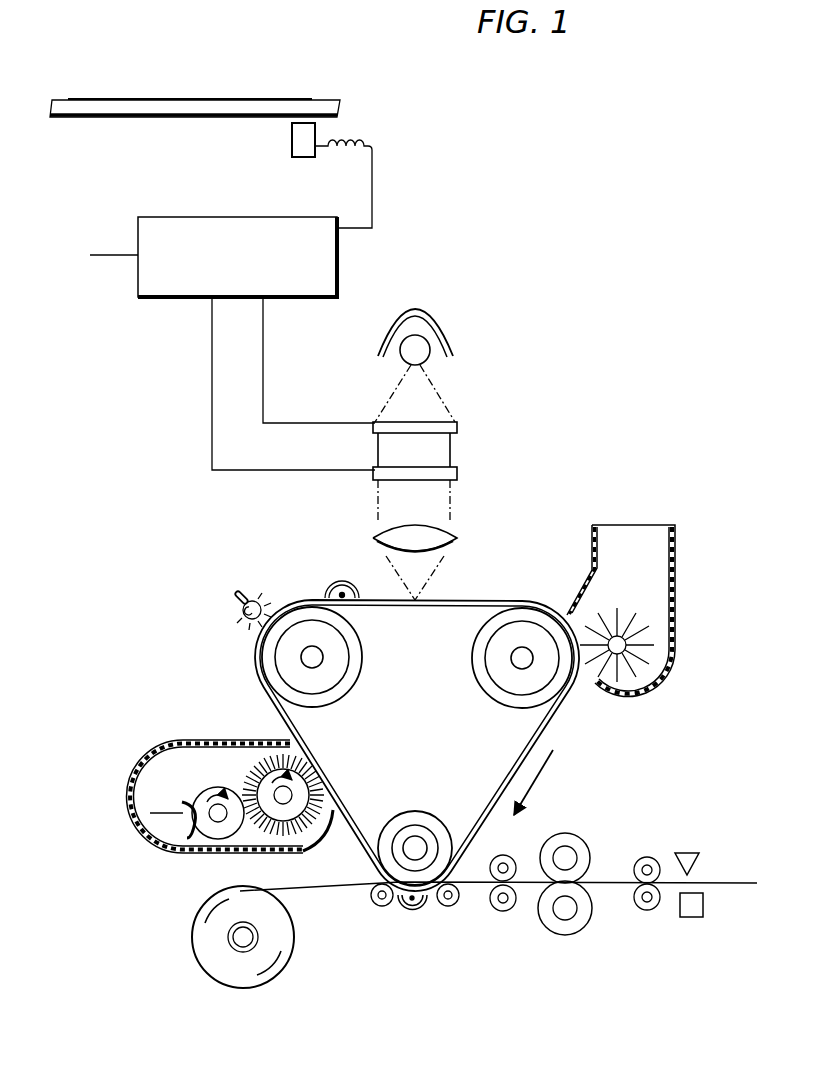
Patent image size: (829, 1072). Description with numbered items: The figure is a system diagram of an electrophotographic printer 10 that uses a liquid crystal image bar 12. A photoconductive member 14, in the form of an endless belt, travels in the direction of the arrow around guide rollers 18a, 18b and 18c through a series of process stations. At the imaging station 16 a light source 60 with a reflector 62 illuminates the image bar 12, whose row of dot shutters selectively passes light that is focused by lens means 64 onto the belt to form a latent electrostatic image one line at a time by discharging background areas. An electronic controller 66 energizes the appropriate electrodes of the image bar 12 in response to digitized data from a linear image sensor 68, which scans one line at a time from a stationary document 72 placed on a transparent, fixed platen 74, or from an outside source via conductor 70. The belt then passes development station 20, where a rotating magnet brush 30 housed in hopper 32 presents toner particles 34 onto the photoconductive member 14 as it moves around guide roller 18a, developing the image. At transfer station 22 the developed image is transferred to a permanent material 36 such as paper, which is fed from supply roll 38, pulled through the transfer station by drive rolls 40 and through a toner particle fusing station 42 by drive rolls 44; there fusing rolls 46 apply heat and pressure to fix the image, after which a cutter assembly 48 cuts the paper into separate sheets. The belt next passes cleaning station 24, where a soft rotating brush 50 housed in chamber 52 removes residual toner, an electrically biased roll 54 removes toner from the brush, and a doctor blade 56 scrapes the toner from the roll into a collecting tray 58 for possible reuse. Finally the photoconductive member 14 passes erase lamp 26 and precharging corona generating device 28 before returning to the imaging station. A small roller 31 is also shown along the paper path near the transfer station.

The electrophotographic printer 10 is at (486, 315).
The liquid crystal image bar 12 is at (482, 411).
The photoconductive member 14 is at (510, 770).
The imaging station 16 is at (448, 528).
The guide roller 18a is at (492, 680).
The guide roller 18b is at (418, 810).
The guide roller 18c is at (357, 680).
The development station 20 is at (662, 593).
The transfer station 22 is at (486, 898).
The cleaning station 24 is at (217, 778).
The erase lamp 26 is at (240, 618).
The precharging corona generating device 28 is at (337, 580).
The rotating magnet brush 30 is at (618, 614).
The guide roller 31 is at (370, 903).
The hopper 32 is at (656, 525).
The toner particles 34 is at (662, 690).
The permanent material 36 is at (406, 913).
The supply roll 38 is at (203, 910).
The drive rolls 40 is at (499, 903).
The toner particle fusing station 42 is at (572, 906).
The drive rolls 44 is at (650, 856).
The fusing rolls 46 is at (558, 927).
The cutter assembly 48 is at (712, 862).
The soft rotating brush 50 is at (250, 757).
The chamber 52 is at (200, 740).
The electrically biased roll 54 is at (215, 790).
The doctor blade 56 is at (184, 800).
The collecting tray 58 is at (160, 826).
The light source 60 is at (402, 358).
The reflector 62 is at (432, 318).
The lens means 64 is at (460, 538).
The electronic controller 66 is at (316, 217).
The linear image sensor 68 is at (290, 139).
The conductor 70 is at (116, 255).
The stationary document 72 is at (233, 100).
The platen 74 is at (334, 111).